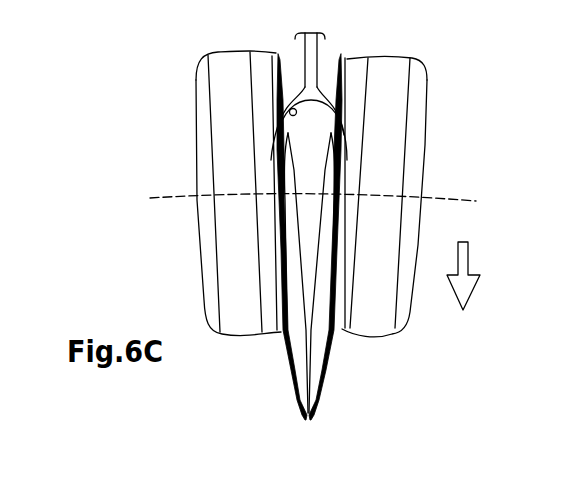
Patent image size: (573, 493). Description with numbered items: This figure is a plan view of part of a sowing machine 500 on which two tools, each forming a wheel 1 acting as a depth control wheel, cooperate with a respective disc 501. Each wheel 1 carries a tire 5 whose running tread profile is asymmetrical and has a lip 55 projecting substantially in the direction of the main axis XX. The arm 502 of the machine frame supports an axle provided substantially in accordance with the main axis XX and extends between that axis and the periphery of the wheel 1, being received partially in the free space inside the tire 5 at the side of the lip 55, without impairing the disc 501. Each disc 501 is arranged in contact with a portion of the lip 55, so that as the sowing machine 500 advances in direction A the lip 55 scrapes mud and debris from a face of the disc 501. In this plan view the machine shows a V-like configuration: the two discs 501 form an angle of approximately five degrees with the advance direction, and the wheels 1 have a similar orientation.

The wheel 1 is at (234, 283).
The tire 5 is at (227, 90).
The lip 55 is at (280, 53).
The sowing machine 500 is at (315, 211).
The disc 501 is at (297, 362).
The arm 502 is at (318, 117).
The main axis XX is at (168, 197).
The movement direction arrow A is at (463, 255).